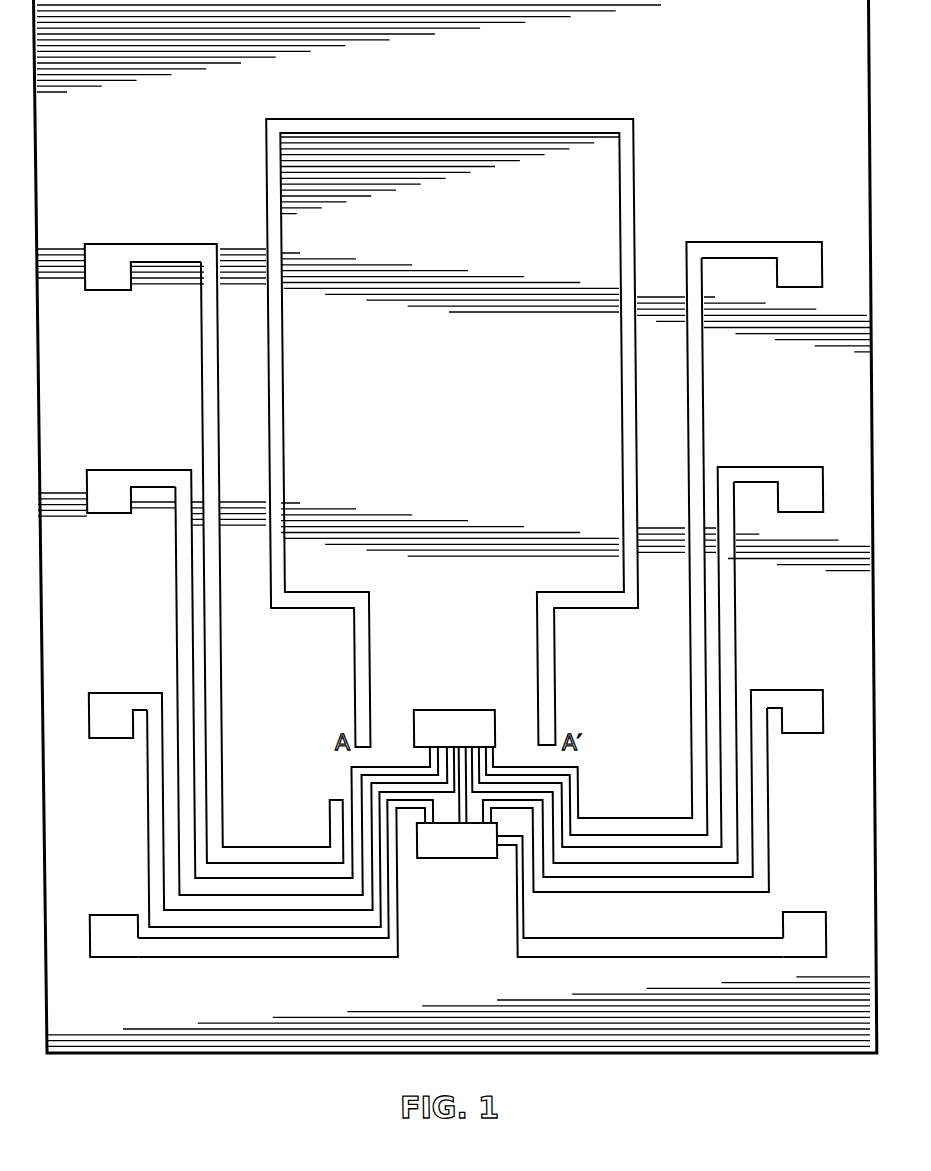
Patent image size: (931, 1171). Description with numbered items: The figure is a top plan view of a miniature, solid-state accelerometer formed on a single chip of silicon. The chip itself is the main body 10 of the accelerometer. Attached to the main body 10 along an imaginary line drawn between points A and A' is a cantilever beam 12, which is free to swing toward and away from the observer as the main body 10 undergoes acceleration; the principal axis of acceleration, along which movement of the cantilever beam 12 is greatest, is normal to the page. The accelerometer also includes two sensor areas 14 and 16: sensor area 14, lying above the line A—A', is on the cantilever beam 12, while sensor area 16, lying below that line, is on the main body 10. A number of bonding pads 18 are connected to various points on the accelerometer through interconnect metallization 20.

The main body 10 is at (294, 1057).
The cantilever beam 12 is at (456, 418).
The sensor area 14 is at (453, 718).
The sensor area 16 is at (462, 852).
The bonding pads 18 is at (113, 485).
The interconnect metallization 20 is at (281, 945).